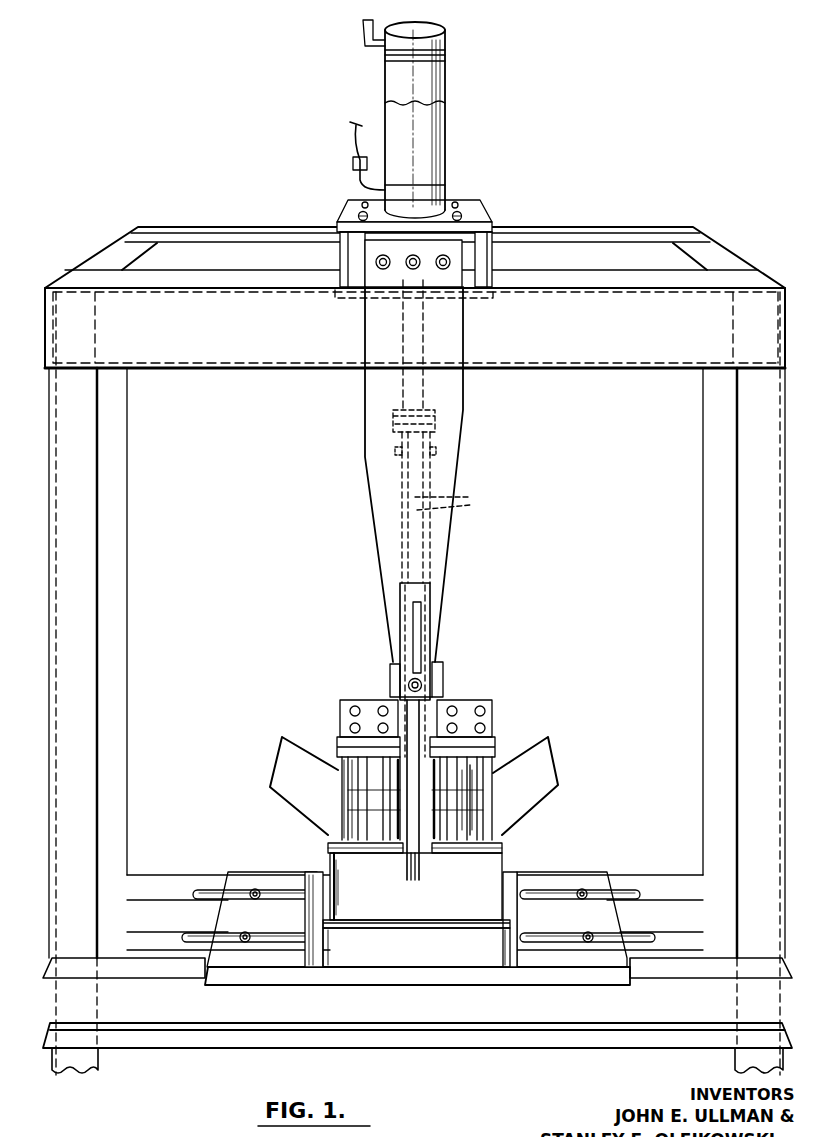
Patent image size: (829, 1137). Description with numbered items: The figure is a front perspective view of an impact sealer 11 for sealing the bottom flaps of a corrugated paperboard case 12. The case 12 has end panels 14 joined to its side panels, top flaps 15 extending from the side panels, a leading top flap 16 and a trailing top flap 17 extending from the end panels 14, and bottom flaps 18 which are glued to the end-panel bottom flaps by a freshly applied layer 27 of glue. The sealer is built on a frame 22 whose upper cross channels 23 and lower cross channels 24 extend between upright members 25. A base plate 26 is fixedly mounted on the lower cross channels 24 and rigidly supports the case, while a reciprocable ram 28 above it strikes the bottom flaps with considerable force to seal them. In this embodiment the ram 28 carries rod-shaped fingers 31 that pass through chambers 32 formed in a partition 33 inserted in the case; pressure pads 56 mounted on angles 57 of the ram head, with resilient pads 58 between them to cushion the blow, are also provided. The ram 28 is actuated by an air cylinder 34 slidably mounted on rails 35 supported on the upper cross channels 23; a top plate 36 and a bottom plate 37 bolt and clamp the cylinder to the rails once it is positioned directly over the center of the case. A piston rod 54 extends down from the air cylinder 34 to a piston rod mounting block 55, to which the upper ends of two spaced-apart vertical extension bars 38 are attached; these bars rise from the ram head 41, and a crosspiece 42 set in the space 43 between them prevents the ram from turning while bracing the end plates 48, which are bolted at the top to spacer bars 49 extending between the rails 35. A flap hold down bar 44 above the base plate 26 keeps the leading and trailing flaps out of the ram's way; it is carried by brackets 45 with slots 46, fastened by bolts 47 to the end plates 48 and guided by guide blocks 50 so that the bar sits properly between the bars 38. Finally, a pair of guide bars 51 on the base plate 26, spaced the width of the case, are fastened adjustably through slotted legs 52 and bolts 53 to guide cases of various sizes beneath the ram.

The impact sealer 11 is at (583, 160).
The case 12 is at (397, 914).
The end panels 14 is at (416, 947).
The top flaps 15 is at (548, 752).
The leading top flap 16 is at (503, 843).
The trailing top flap 17 is at (345, 778).
The bottom flaps 18 is at (365, 923).
The frame 22 is at (417, 654).
The upper cross channels 23 is at (636, 369).
The lower cross channels 24 is at (580, 1050).
The upright members 25 is at (85, 720).
The base plate 26 is at (575, 977).
The layer of glue 27 is at (465, 918).
The reciprocable ram 28 is at (429, 756).
The rod-shaped fingers 31 is at (500, 815).
The chambers 32 is at (490, 786).
The partition 33 is at (340, 795).
The air cylinder 34 is at (445, 76).
The rails 35 is at (342, 242).
The top plate 36 is at (480, 200).
The bottom plate 37 is at (480, 290).
The vertical extension bars 38 is at (456, 506).
The ram head 41 is at (462, 693).
The crosspiece 42 is at (442, 662).
The space 43 is at (420, 545).
The flap hold down bar 44 is at (419, 872).
The brackets 45 is at (447, 848).
The slots 46 is at (497, 768).
The bolts 47 is at (408, 684).
The end plates 48 is at (385, 490).
The spacer bars 49 is at (360, 240).
The guide blocks 50 is at (396, 662).
The guide bars 51 is at (325, 935).
The slotted legs 52 is at (197, 935).
The bolts 53 is at (265, 910).
The piston rod 54 is at (426, 388).
The piston rod mounting block 55 is at (415, 448).
The pressure pads 56 is at (492, 750).
The angles 57 is at (480, 703).
The resilient pads 58 is at (345, 745).